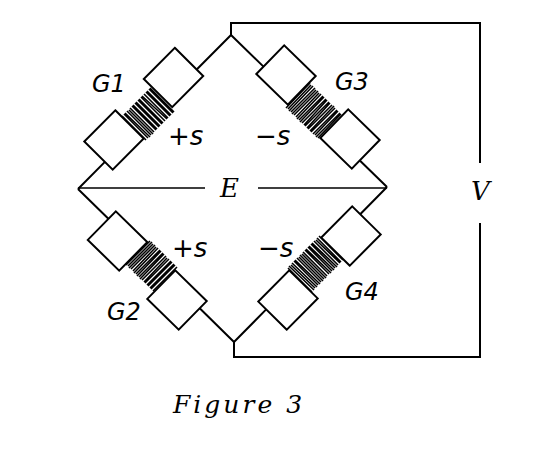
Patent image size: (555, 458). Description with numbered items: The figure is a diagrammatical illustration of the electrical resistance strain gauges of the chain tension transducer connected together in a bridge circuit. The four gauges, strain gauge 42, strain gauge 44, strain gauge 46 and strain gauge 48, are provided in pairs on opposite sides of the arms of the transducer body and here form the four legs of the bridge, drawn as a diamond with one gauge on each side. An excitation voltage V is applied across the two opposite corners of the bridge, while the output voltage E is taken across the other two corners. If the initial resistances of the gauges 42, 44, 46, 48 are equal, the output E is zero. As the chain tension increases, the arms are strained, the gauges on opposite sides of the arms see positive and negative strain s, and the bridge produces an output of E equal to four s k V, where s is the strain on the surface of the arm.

The electrical resistance strain gauge 42 is at (175, 73).
The electrical resistance strain gauge 44 is at (117, 243).
The electrical resistance strain gauge 46 is at (342, 130).
The electrical resistance strain gauge 48 is at (310, 300).